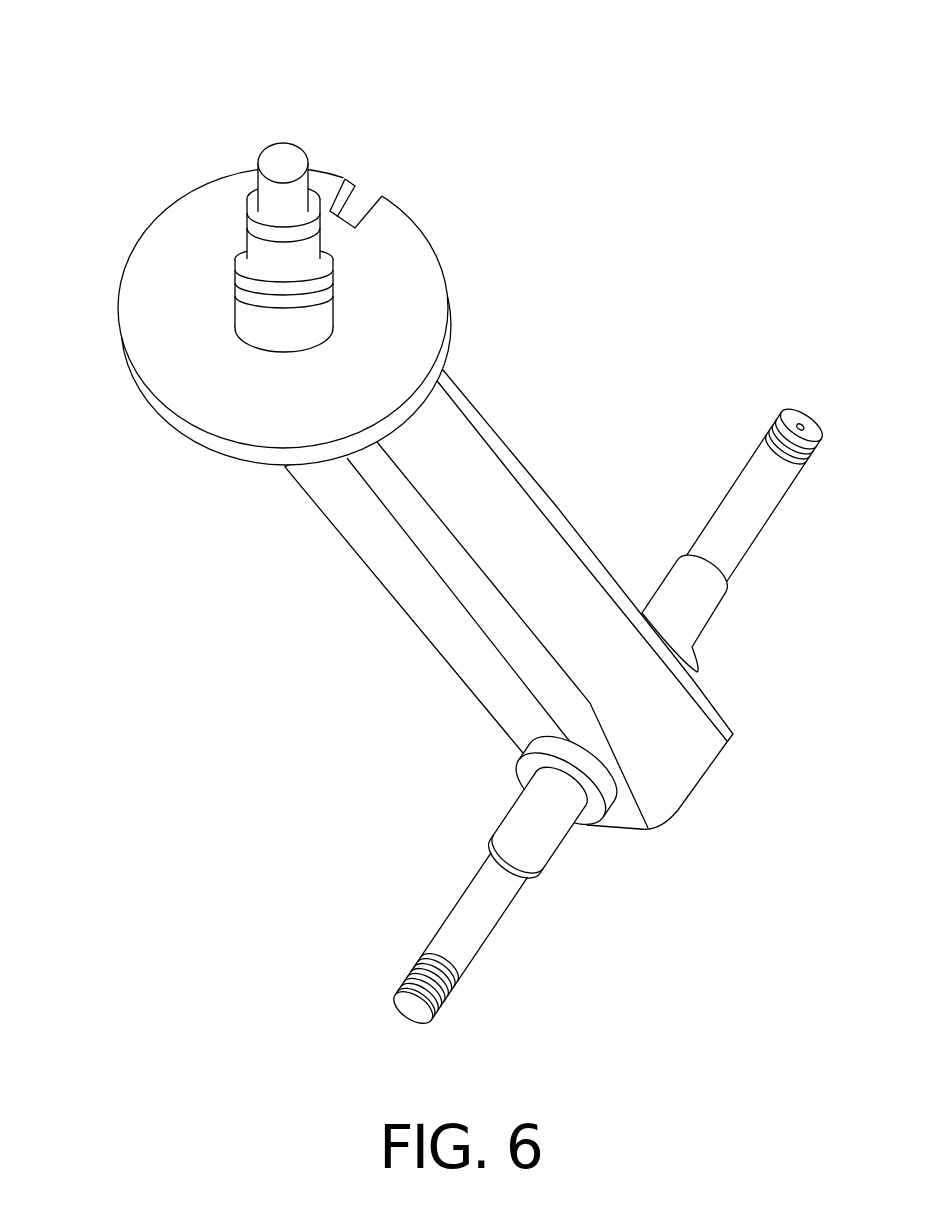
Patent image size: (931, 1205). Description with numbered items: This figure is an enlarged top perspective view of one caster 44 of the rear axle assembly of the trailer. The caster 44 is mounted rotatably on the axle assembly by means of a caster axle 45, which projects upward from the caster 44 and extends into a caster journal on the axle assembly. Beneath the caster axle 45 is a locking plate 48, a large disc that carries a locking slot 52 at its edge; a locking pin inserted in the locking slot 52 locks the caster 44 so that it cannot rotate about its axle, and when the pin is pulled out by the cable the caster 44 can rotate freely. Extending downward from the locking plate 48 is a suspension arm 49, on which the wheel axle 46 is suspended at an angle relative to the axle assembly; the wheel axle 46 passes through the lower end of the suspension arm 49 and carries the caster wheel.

The caster 44 is at (572, 374).
The caster axle 45 is at (287, 163).
The wheel axle 46 is at (500, 816).
The locking plate 48 is at (118, 297).
The suspension arm 49 is at (559, 514).
The locking slot 52 is at (359, 200).